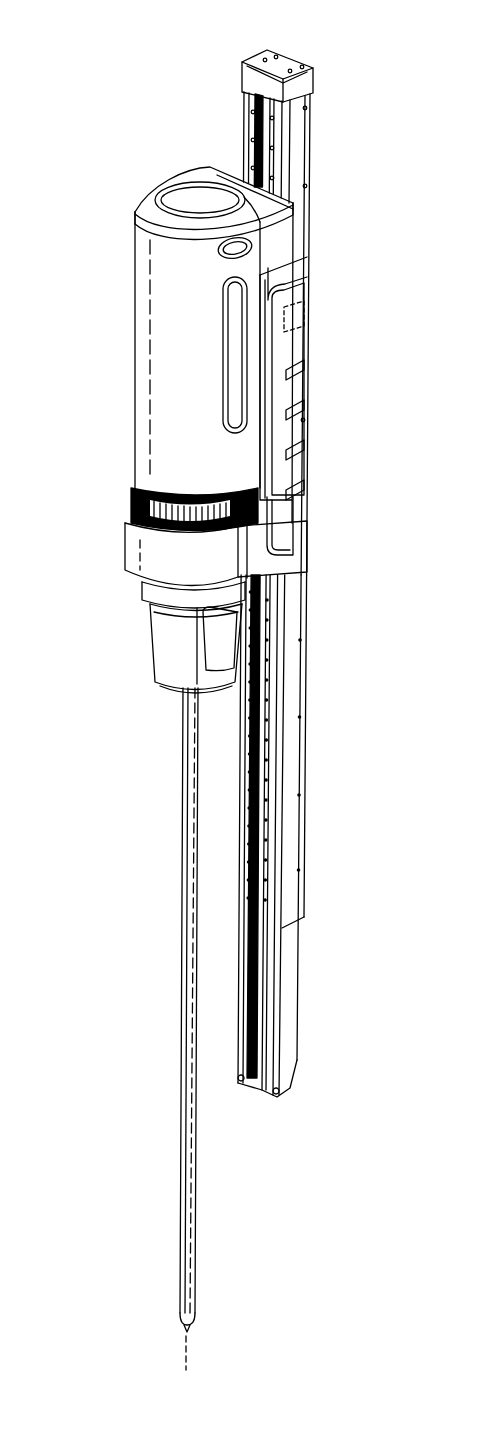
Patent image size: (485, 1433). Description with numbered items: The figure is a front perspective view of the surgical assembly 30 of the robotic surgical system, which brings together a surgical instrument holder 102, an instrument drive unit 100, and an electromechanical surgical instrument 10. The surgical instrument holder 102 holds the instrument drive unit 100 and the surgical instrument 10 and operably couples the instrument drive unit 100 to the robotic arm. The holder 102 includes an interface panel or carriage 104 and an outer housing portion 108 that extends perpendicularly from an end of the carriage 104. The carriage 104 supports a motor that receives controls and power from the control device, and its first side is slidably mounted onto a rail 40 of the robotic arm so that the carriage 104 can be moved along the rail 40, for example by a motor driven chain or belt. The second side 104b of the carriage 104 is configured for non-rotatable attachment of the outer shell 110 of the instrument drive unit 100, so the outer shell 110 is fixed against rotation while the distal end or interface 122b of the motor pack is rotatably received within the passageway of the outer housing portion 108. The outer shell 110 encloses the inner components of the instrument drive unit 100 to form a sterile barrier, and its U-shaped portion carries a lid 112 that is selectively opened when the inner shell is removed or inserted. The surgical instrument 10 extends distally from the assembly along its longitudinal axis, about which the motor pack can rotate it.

The surgical assembly 30 is at (213, 46).
The rail 40 is at (323, 96).
The instrument drive unit 100 is at (127, 325).
The outer shell 110 is at (143, 250).
The lid 112 is at (180, 196).
The surgical instrument holder 102 is at (313, 347).
The carriage 104 is at (296, 428).
The second side of carriage 104b is at (270, 513).
The distal end or interface of motor pack 122b is at (126, 510).
The outer housing portion 108 is at (223, 557).
The surgical instrument 10 is at (142, 658).